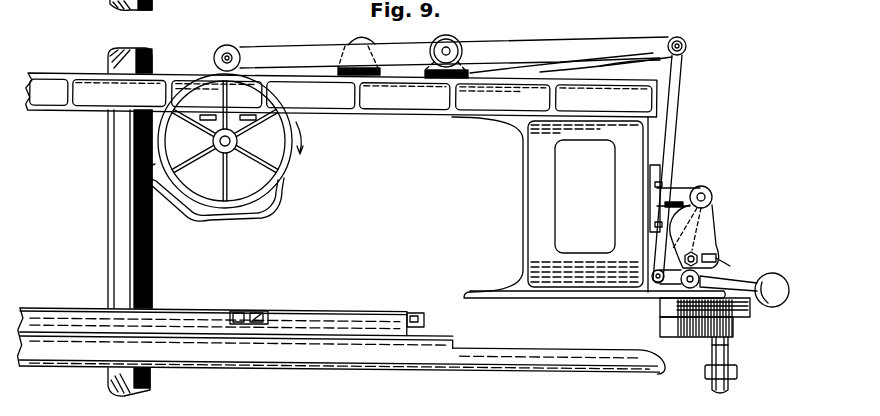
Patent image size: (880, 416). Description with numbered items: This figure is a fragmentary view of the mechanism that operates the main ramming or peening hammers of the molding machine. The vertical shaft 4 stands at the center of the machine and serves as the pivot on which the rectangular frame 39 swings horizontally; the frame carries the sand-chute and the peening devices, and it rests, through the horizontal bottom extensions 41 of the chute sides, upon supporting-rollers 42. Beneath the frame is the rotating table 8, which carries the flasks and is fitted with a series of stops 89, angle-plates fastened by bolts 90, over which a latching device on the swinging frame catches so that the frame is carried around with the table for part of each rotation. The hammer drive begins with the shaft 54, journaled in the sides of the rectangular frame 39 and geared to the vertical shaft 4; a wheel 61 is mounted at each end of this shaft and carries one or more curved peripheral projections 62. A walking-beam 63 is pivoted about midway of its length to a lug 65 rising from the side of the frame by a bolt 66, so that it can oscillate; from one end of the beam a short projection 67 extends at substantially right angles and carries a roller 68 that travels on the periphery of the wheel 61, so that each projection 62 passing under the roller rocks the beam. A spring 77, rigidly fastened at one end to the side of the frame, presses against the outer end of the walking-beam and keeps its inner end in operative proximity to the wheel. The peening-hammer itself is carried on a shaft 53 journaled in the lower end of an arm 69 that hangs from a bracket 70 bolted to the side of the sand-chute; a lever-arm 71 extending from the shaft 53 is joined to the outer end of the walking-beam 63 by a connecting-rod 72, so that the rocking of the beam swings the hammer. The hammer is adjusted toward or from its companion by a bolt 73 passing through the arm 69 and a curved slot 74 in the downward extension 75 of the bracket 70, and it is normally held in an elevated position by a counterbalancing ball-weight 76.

The vertical shaft 4 is at (125, 68).
The rotating table 8 is at (510, 360).
The rectangular frame 39 is at (620, 106).
The horizontal bottom extensions 41 is at (735, 318).
The supporting-rollers 42 is at (729, 362).
The shaft of peening-hammer 53 is at (710, 260).
The shaft 54 is at (230, 150).
The wheel 61 is at (288, 170).
The curved peripheral projection 62 is at (255, 212).
The walking-beam 63 is at (510, 55).
The lug 65 is at (360, 36).
The bolt 66 is at (447, 50).
The short projection 67 is at (229, 55).
The roller 68 is at (240, 53).
The arm 69 is at (735, 266).
The bracket 70 is at (712, 193).
The lever-arm 71 is at (656, 274).
The connecting-rod 72 is at (673, 128).
The bolt 73 is at (684, 256).
The curved slot 74 is at (772, 272).
The downward extension 75 is at (700, 238).
The counterbalancing ball-weight 76 is at (786, 286).
The spring 77 is at (630, 67).
The stop 89 is at (240, 313).
The bolt 90 is at (258, 313).